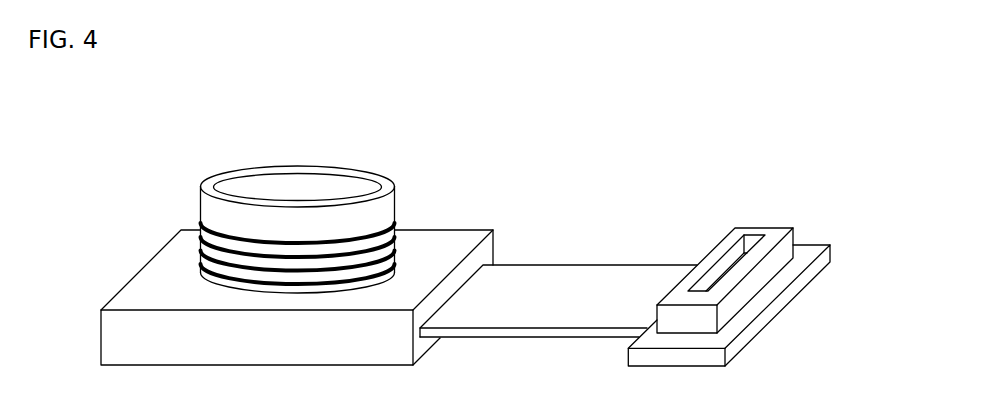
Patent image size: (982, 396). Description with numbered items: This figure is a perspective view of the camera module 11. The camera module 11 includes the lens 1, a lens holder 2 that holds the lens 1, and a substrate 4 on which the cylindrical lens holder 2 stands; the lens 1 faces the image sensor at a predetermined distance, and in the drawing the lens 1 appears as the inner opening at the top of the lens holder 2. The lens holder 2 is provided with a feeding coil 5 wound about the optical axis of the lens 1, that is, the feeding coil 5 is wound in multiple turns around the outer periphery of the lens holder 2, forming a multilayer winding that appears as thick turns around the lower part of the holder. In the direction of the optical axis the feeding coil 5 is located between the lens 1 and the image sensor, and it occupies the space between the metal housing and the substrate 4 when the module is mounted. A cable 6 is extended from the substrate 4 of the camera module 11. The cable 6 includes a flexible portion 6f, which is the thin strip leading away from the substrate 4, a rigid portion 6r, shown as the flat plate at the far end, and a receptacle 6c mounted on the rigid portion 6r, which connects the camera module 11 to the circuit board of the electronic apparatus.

The camera module 11 is at (566, 46).
The lens 1 is at (298, 182).
The lens holder 2 is at (388, 187).
The substrate 4 is at (156, 272).
The feeding coil 5 is at (398, 252).
The cable 6 is at (838, 167).
The flexible portion 6f is at (621, 275).
The receptacle 6c is at (773, 237).
The rigid portion 6r is at (808, 252).